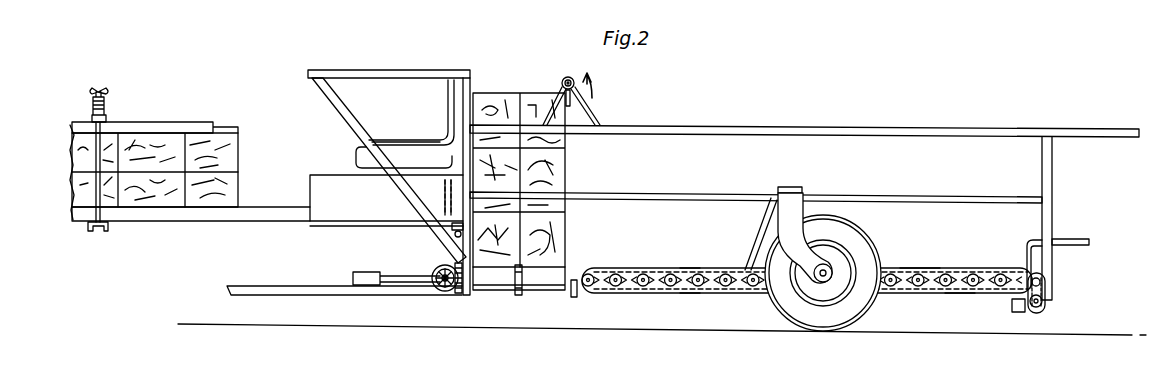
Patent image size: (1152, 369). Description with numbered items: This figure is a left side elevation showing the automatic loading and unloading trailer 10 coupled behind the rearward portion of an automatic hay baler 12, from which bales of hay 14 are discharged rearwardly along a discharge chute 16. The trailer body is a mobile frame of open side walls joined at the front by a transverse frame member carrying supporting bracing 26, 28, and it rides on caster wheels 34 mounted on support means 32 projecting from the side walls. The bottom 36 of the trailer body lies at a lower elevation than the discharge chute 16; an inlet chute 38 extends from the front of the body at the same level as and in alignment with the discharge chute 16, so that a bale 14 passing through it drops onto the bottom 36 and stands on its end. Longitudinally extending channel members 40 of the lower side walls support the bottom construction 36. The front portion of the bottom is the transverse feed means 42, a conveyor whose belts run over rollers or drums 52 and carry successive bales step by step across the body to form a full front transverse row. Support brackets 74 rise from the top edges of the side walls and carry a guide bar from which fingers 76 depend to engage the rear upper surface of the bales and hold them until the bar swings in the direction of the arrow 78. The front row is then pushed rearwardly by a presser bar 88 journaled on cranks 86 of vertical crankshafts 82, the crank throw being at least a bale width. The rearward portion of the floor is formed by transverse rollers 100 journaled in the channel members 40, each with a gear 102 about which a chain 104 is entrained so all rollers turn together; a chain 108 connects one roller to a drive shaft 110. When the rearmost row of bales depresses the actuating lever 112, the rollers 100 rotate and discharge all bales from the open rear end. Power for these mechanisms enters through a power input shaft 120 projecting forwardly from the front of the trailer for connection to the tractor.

The automatic loading and unloading trailer 10 is at (779, 109).
The rearward portion of the hay baler 12 is at (71, 107).
The bale of hay 14 is at (153, 150).
The discharge chute 16 is at (178, 214).
The supporting bracing 26 is at (330, 100).
The supporting bracing 28 is at (352, 72).
The support means 32 is at (797, 184).
The caster wheel 34 is at (848, 238).
The bottom of the trailer body 36 is at (620, 261).
The inlet chute 38 is at (378, 203).
The channel member 40 is at (915, 275).
The transverse feed means 42 is at (497, 288).
The roller or drum 52 is at (552, 282).
The support bracket 74 is at (560, 79).
The finger 76 is at (574, 103).
The arrow 78 is at (592, 98).
The crankshaft 82 is at (447, 111).
The crank 86 is at (403, 138).
The presser bar 88 is at (360, 156).
The roller 100 is at (971, 294).
The gear 102 is at (699, 291).
The chain 104 is at (683, 270).
The chain 108 is at (1046, 296).
The drive shaft 110 is at (1045, 306).
The actuating lever 112 is at (1075, 240).
The power input shaft 120 is at (403, 276).